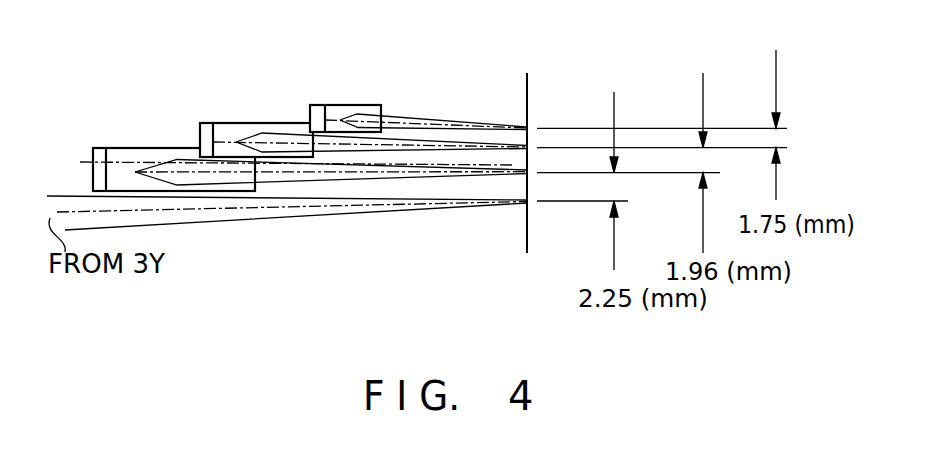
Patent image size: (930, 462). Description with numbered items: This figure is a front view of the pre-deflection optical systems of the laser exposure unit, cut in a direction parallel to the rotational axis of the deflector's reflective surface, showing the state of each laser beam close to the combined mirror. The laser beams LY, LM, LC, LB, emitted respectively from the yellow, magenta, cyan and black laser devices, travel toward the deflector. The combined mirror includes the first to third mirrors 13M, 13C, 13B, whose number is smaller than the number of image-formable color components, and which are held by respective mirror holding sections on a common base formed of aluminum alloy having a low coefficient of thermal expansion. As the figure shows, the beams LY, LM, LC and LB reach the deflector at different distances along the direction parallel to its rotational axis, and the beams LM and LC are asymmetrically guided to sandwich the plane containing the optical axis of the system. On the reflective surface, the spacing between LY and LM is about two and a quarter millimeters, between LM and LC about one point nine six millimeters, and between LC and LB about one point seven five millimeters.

The first mirror 13M is at (130, 147).
The second mirror 13C is at (240, 122).
The third mirror 13B is at (337, 105).
The laser beam LM is at (392, 178).
The laser beam LC is at (405, 143).
The laser beam LB is at (467, 125).
The laser beam LY is at (468, 201).